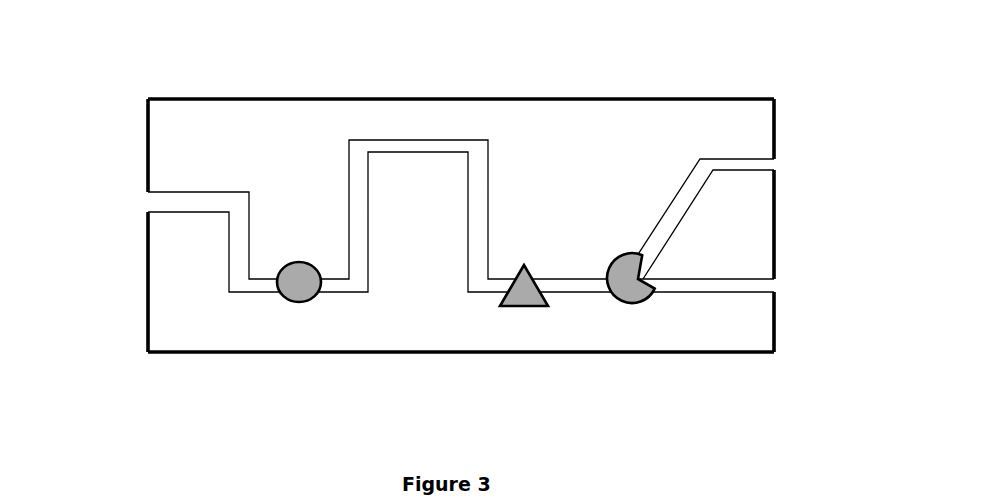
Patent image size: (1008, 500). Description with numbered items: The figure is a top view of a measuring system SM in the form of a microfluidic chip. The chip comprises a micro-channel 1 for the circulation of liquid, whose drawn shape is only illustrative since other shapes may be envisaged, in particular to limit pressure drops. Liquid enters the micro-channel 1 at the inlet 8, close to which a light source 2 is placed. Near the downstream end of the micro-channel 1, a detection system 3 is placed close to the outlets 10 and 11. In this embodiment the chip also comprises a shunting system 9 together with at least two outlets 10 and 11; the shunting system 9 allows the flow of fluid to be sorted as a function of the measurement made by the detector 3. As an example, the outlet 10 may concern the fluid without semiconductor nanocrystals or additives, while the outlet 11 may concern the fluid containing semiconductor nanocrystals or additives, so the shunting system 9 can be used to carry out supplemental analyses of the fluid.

The measuring system SM is at (268, 97).
The micro-channel 1 is at (355, 180).
The inlet 8 is at (140, 210).
The outlet 10 is at (781, 152).
The outlet 11 is at (787, 290).
The light source 2 is at (292, 305).
The detection system 3 is at (525, 310).
The shunting system 9 is at (633, 308).